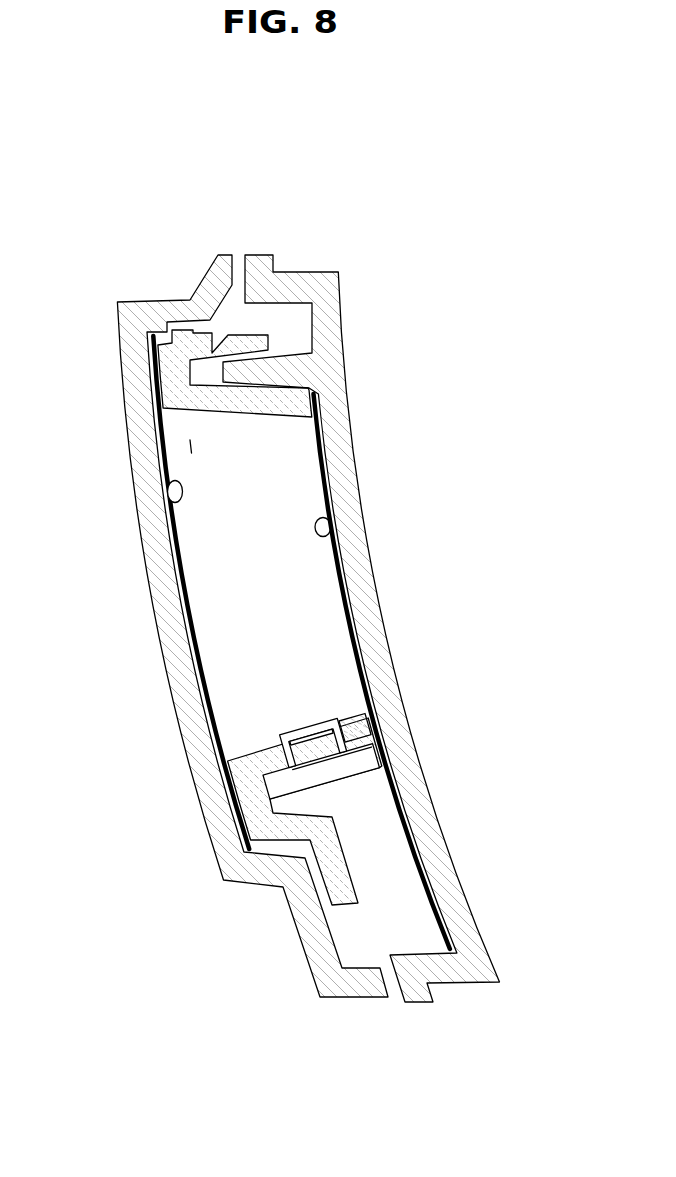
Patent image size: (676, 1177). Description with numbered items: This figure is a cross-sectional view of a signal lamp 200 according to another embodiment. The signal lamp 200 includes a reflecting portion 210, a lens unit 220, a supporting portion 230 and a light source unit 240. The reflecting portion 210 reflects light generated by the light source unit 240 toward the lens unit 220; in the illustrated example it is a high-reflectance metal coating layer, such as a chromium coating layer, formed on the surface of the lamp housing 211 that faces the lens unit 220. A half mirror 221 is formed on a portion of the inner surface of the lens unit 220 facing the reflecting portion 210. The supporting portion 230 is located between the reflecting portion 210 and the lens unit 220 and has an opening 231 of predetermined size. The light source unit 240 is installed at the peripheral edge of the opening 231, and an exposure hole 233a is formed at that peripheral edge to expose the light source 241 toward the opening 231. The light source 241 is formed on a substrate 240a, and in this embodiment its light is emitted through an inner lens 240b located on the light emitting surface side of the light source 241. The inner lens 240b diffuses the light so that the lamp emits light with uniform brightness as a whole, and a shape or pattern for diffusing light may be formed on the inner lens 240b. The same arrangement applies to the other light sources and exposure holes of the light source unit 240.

The signal lamp 200 is at (362, 184).
The reflecting portion 210 is at (333, 535).
The lamp housing 211 is at (342, 443).
The lens unit 220 is at (160, 605).
The half mirror 221 is at (172, 505).
The supporting portion 230 is at (253, 807).
The opening 231 is at (190, 448).
The exposure hole 233a is at (355, 728).
The light source unit 240 is at (377, 723).
The substrate 240a is at (321, 771).
The inner lens 240b is at (313, 742).
The light source 241 is at (311, 737).